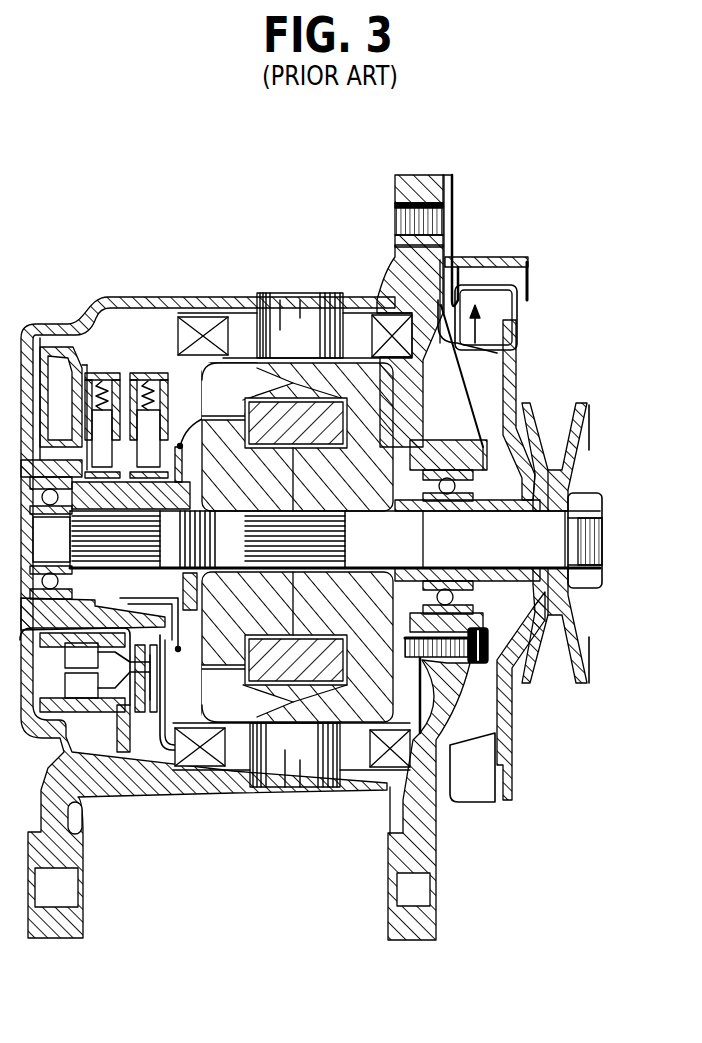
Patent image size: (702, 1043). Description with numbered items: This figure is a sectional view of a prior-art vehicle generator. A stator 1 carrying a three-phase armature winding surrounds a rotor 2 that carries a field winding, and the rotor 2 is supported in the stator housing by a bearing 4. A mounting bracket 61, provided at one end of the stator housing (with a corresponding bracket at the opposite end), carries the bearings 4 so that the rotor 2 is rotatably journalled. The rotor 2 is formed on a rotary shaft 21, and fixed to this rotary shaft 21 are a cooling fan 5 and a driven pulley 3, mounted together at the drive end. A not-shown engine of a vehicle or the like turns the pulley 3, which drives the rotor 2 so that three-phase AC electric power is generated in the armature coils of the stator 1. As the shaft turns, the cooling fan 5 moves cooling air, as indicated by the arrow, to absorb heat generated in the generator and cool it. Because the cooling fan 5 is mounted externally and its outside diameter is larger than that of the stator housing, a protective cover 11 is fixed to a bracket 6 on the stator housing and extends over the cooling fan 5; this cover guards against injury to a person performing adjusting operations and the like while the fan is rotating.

The stator 1 is at (283, 773).
The rotor 2 is at (237, 702).
The driven pulley 3 is at (575, 688).
The bearing 4 is at (450, 470).
The cooling fan 5 is at (478, 802).
The bracket 6 is at (428, 180).
The protective cover 11 is at (503, 258).
The rotary shaft 21 is at (550, 528).
The mounting bracket 61 is at (430, 915).